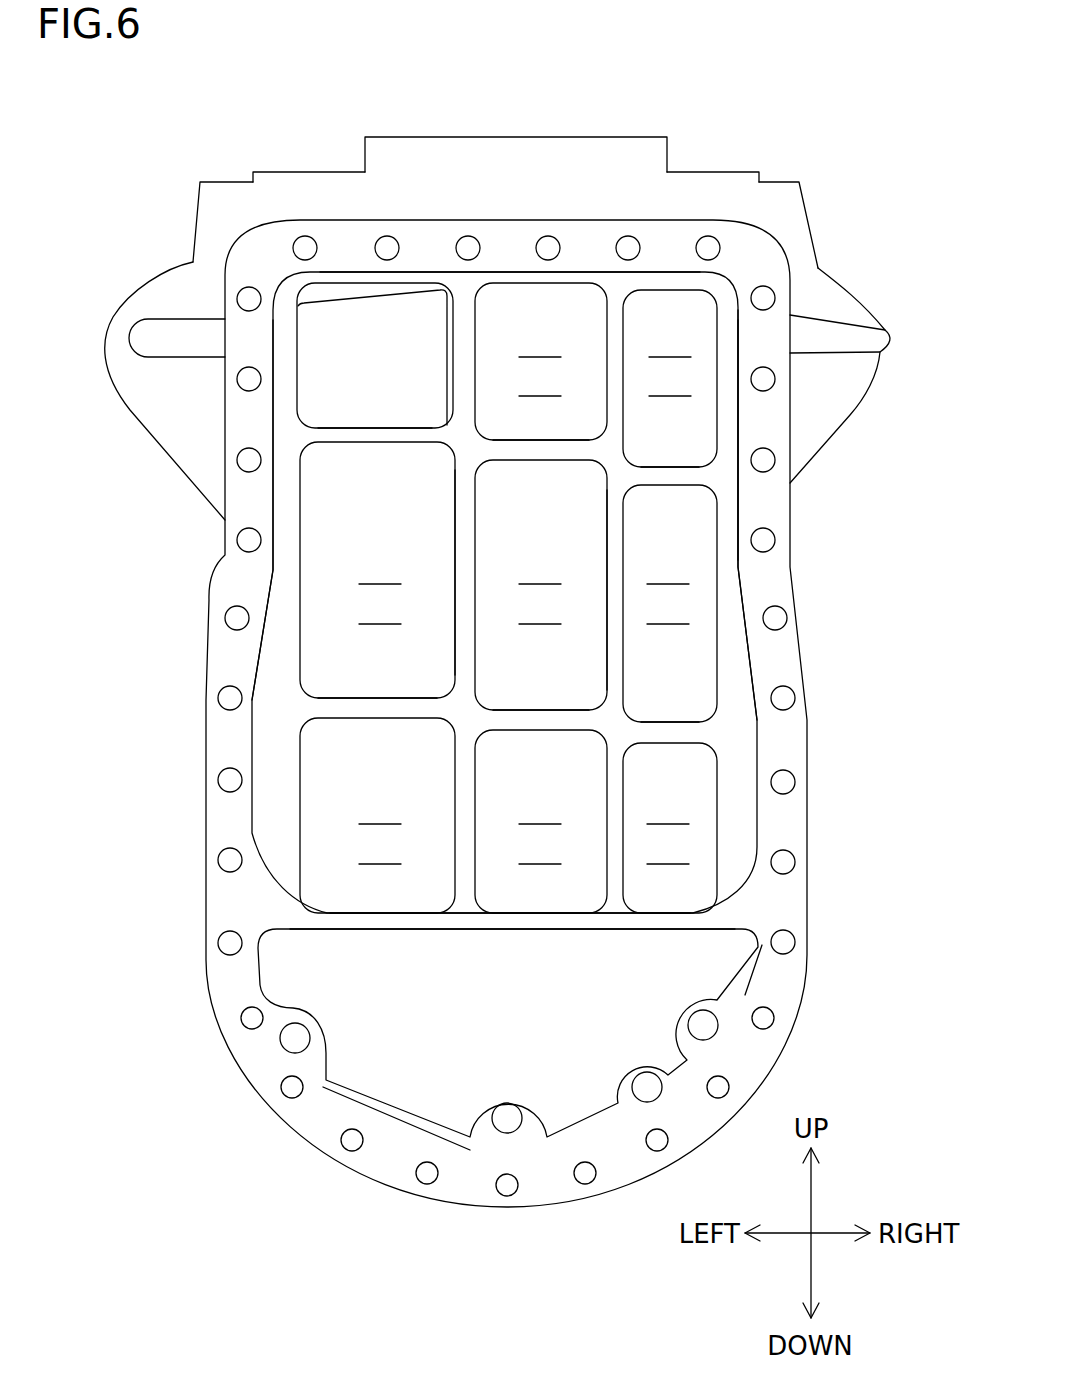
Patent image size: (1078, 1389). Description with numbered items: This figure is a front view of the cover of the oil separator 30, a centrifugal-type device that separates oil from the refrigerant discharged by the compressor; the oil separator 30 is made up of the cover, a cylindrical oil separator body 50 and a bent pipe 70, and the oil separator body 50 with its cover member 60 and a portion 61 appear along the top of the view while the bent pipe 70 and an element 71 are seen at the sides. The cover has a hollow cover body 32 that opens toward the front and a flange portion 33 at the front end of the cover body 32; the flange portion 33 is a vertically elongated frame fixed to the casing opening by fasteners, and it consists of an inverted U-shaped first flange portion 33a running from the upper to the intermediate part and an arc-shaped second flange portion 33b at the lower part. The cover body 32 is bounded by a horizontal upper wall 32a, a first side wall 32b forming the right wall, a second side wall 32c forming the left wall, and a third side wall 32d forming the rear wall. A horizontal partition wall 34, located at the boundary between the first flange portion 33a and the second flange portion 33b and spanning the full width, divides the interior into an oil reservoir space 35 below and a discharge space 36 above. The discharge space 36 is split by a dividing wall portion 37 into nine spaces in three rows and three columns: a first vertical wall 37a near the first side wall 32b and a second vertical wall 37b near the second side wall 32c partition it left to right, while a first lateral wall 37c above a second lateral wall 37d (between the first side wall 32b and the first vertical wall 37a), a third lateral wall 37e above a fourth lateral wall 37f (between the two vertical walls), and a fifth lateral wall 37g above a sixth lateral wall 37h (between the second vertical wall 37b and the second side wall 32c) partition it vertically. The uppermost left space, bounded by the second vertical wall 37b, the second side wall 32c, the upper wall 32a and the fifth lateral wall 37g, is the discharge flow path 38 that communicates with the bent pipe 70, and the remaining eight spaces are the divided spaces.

The oil separator 30 is at (777, 135).
The cover body 32 is at (785, 250).
The upper wall 32a is at (597, 270).
The first side wall 32b is at (728, 575).
The second side wall 32c is at (282, 574).
The third side wall 32d is at (700, 417).
The flange portion 33 is at (810, 800).
The first flange portion 33a is at (240, 518).
The second flange portion 33b is at (542, 1180).
The partition wall 34 is at (518, 918).
The oil reservoir space 35 is at (485, 1057).
The discharge space 36 is at (700, 642).
The dividing wall portion 37 is at (338, 722).
The first vertical wall 37a is at (613, 668).
The second vertical wall 37b is at (460, 666).
The first lateral wall 37c is at (668, 474).
The second lateral wall 37d is at (668, 731).
The third lateral wall 37e is at (538, 447).
The fourth lateral wall 37f is at (538, 722).
The fifth lateral wall 37g is at (380, 434).
The sixth lateral wall 37h is at (380, 709).
The discharge flow path 38 is at (357, 372).
The oil separator body 50 is at (188, 225).
The cover member 60 is at (325, 150).
The step portion 61 is at (703, 172).
The bent pipe 70 is at (153, 278).
The boss 71 is at (122, 370).